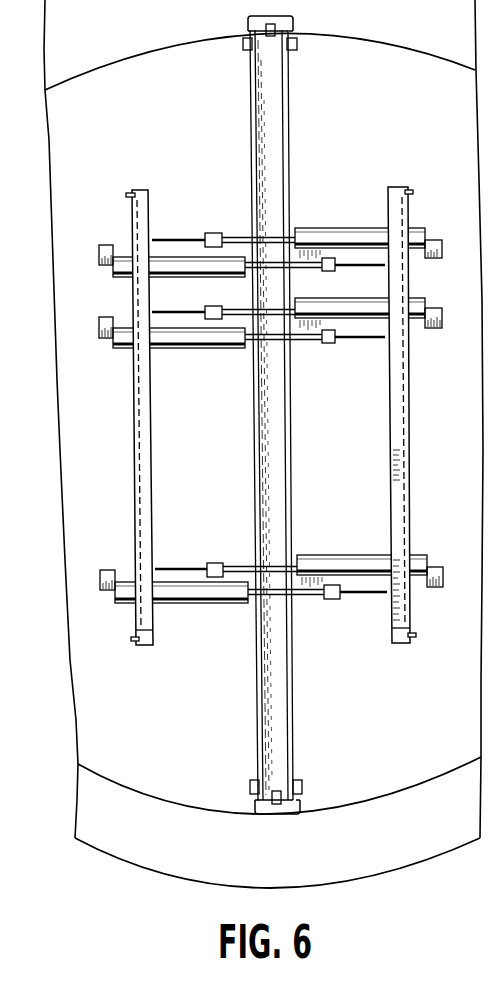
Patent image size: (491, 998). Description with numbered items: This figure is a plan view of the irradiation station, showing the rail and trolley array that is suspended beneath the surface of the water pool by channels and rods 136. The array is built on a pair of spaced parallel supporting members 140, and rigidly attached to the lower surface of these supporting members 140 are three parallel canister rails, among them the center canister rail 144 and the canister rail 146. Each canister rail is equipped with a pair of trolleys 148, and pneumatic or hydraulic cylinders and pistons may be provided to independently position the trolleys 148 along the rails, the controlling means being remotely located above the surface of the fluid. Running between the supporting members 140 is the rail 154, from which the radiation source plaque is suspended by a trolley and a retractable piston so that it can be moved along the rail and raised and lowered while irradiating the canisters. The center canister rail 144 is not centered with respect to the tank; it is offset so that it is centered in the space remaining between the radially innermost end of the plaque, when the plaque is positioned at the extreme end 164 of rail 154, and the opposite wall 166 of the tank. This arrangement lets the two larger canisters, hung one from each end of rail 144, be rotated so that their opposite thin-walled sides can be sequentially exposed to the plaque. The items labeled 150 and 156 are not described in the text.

The rods 136 is at (135, 640).
The supporting members 140 is at (150, 222).
The center canister rail 144 is at (433, 330).
The canister rail 146 is at (441, 566).
The trolleys 148 is at (188, 238).
The cylinder 150 is at (200, 268).
The rail 154 is at (277, 144).
The end bracket 156 is at (247, 20).
The extreme end of rail 164 is at (268, 742).
The opposite wall of the tank 166 is at (367, 28).